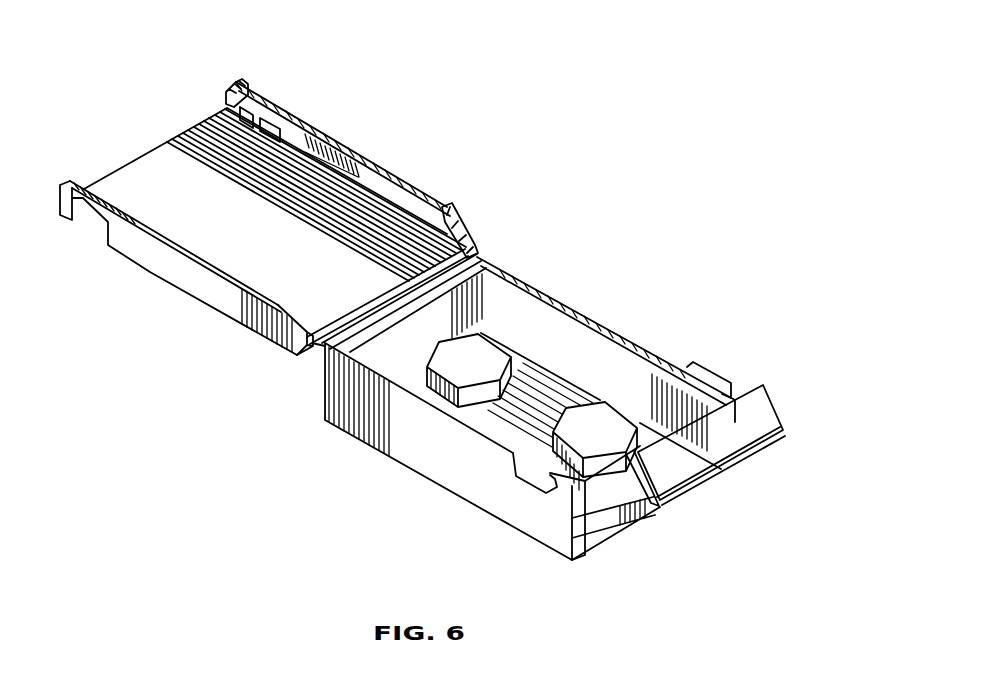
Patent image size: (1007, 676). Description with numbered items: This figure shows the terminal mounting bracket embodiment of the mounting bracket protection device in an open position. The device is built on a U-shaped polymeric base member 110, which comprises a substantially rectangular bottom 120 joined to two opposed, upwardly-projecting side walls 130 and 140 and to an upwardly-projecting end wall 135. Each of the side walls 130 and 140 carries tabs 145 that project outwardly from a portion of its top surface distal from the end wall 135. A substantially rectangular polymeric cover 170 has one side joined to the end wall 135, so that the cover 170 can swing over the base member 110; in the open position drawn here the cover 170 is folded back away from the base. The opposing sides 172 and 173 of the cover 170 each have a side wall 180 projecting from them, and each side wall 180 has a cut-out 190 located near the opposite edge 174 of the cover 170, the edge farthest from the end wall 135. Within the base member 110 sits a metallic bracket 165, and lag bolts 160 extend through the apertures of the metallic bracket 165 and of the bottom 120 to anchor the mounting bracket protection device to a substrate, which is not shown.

The U-shaped polymeric base member 110 is at (637, 538).
The bottom 120 is at (676, 512).
The side wall 130 is at (432, 450).
The end wall 135 is at (405, 348).
The side wall 140 is at (600, 317).
The tabs 145 is at (705, 380).
The lag bolts 160 is at (463, 350).
The metallic bracket 165 is at (756, 463).
The cover 170 is at (272, 207).
The side of cover 172 is at (153, 272).
The side of cover 173 is at (376, 157).
The opposite edge of cover 174 is at (158, 133).
The side wall 180 is at (405, 178).
The cut-out 190 is at (268, 124).